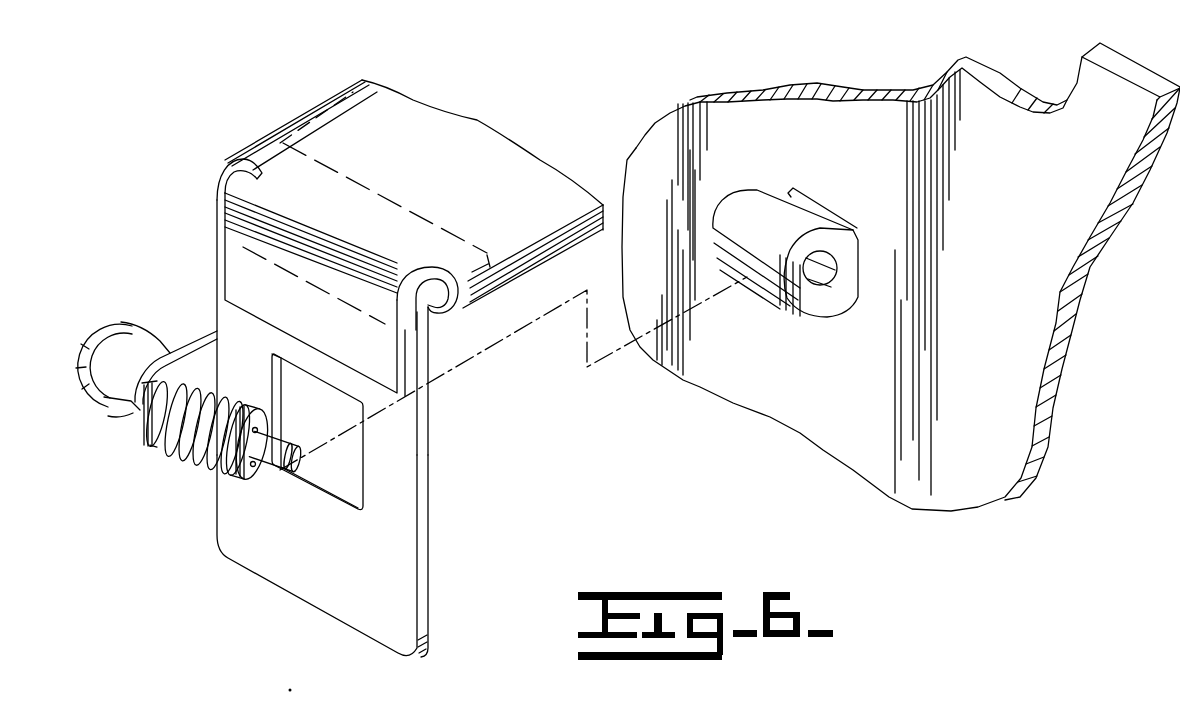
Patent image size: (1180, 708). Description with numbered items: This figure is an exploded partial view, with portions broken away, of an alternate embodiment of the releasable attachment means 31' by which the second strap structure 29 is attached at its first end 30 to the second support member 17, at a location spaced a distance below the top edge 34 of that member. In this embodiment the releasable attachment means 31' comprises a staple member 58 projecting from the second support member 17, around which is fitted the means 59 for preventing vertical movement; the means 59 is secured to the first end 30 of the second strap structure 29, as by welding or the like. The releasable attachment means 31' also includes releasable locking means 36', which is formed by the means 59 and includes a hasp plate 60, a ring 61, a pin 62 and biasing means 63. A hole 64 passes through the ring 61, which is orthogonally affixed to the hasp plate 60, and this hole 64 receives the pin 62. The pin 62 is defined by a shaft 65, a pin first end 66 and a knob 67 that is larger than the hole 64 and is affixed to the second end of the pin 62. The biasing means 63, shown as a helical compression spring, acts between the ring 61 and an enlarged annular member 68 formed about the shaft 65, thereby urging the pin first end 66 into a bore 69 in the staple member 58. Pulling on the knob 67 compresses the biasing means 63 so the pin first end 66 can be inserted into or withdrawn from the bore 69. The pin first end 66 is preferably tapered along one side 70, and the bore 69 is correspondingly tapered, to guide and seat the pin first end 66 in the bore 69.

The second support member 17 is at (1034, 403).
The second strap structure 29 is at (200, 160).
The first end 30 is at (472, 291).
The releasable attachment means 31' is at (643, 410).
The top edge 34 is at (1121, 66).
The releasable locking means 36' is at (509, 393).
The staple member 58 is at (745, 197).
The means for preventing vertical movement 59 is at (392, 486).
The hasp plate 60 is at (278, 567).
The ring 61 is at (176, 352).
The pin 62 is at (247, 483).
The biasing means 63 is at (193, 438).
The hole 64 is at (170, 420).
The shaft 65 is at (198, 390).
The pin first end 66 is at (296, 478).
The knob 67 is at (92, 345).
The enlarged annular member 68 is at (228, 466).
The bore 69 is at (829, 305).
The tapered side 70 is at (286, 442).